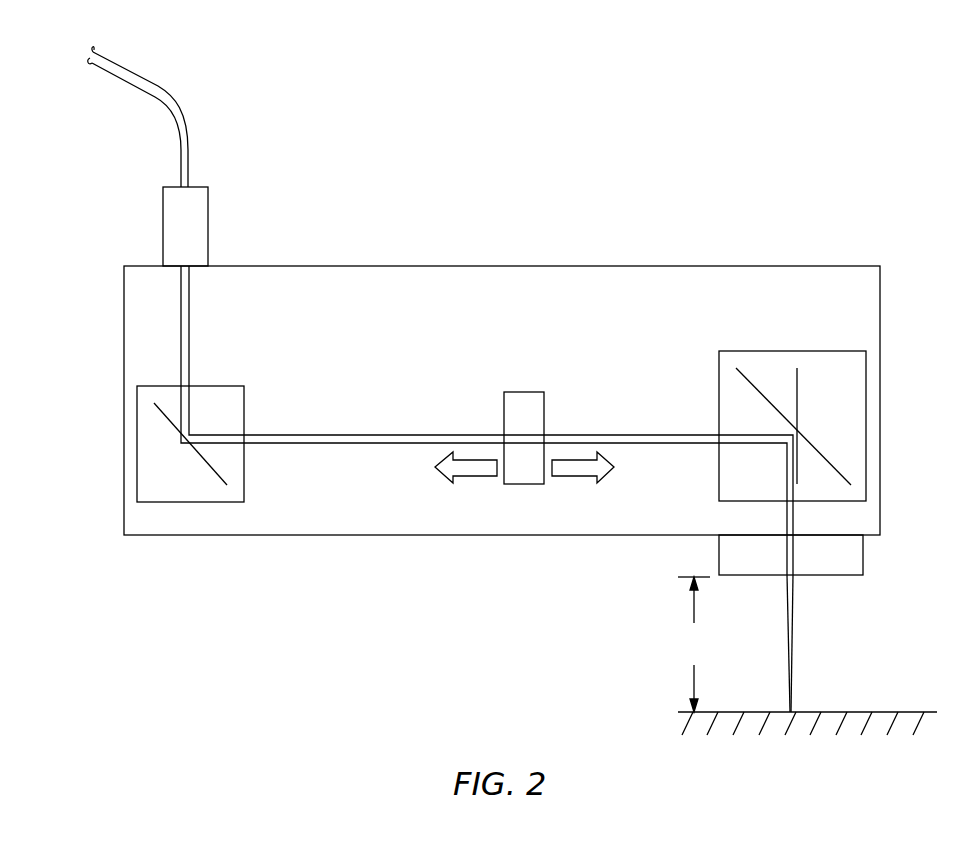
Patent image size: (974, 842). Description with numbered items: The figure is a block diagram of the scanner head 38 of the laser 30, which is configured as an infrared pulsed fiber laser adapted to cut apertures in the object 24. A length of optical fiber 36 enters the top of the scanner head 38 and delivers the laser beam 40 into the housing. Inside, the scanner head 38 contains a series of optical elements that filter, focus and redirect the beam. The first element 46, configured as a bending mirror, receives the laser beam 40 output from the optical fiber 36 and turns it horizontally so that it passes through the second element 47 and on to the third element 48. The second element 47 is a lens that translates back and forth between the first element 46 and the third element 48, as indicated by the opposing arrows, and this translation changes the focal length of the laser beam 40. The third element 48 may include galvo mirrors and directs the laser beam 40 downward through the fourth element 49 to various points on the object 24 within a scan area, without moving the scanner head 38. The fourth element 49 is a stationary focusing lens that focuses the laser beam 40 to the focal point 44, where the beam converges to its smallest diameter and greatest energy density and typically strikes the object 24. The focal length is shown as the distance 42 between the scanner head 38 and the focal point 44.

The object 24 is at (913, 712).
The laser 30 is at (880, 94).
The optical fiber 36 is at (177, 106).
The scanner head 38 is at (875, 205).
The laser beam 40 is at (793, 615).
The distance 42 is at (694, 644).
The focal point 44 is at (790, 708).
The first element 46 is at (244, 398).
The second element 47 is at (524, 392).
The third element 48 is at (762, 350).
The fourth element 49 is at (863, 555).